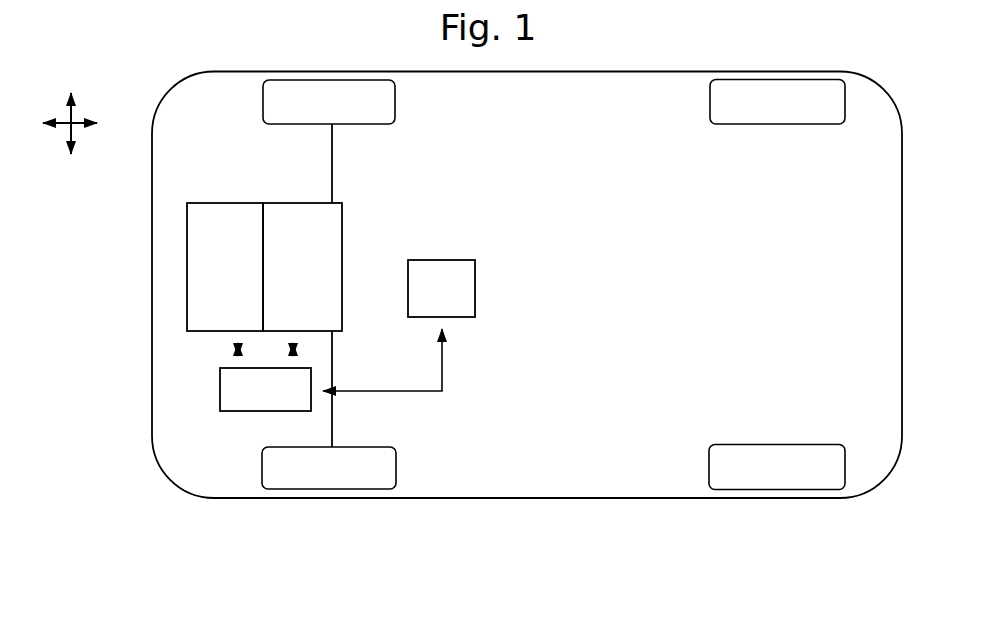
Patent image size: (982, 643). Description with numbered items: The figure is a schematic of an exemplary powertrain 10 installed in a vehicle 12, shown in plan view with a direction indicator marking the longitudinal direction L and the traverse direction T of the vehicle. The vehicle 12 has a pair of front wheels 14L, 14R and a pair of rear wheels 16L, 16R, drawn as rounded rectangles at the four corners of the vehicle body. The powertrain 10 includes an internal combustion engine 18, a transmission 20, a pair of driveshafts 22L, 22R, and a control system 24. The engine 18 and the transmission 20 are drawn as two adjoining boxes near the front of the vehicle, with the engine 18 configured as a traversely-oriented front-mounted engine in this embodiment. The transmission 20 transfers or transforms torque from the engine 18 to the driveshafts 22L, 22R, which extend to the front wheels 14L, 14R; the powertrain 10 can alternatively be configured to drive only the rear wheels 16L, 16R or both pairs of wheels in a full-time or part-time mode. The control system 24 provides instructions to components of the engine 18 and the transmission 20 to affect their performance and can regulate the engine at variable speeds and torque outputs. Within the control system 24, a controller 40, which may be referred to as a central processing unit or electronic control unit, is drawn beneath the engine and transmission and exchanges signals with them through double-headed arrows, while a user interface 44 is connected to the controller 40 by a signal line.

The powertrain 10 is at (501, 325).
The vehicle 12 is at (415, 498).
The front wheel 14R is at (263, 106).
The front wheel 14L is at (262, 465).
The rear wheel 16R is at (710, 108).
The rear wheel 16L is at (709, 449).
The internal combustion engine 18 is at (212, 279).
The transmission 20 is at (289, 279).
The driveshaft 22R is at (332, 160).
The driveshaft 22L is at (332, 422).
The control system 24 is at (543, 283).
The controller 40 is at (251, 401).
The user interface 44 is at (427, 296).
The longitudinal direction L is at (50, 123).
The traverse direction T is at (71, 142).